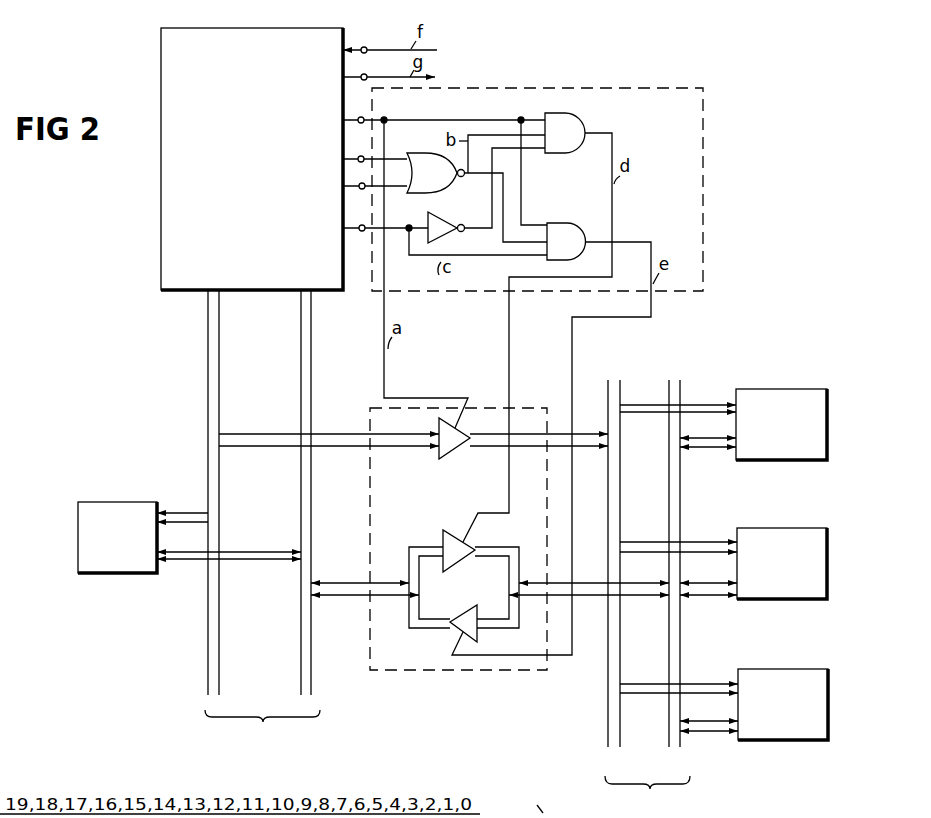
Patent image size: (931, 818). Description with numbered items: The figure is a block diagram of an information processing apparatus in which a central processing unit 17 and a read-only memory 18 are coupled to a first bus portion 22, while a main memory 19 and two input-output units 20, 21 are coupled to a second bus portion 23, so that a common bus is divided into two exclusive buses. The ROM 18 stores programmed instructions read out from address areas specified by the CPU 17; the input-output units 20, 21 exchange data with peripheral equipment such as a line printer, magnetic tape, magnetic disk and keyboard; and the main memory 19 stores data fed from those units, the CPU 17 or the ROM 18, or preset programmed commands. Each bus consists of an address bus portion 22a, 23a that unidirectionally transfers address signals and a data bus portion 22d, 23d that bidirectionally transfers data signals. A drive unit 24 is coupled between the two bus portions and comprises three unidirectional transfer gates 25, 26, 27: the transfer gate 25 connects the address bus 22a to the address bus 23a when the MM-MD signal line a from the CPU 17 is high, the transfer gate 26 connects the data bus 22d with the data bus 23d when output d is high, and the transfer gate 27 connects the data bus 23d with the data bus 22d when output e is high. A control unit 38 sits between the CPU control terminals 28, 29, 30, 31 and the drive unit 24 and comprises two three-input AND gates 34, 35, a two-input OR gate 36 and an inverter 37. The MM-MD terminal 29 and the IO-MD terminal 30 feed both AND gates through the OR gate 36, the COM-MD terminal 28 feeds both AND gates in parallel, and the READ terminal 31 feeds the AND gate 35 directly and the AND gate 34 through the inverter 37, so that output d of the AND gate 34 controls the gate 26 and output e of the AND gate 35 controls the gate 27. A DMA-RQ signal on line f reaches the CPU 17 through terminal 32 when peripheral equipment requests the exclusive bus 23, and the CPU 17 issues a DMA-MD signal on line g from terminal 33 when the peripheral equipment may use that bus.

The central processing unit 17 is at (193, 28).
The read-only memory 18 is at (106, 502).
The main memory 19 is at (803, 389).
The input-output unit 20 is at (796, 528).
The input-output unit 21 is at (798, 669).
The first bus portion 22 is at (243, 521).
The first address bus portion 22a is at (214, 683).
The first data bus portion 22d is at (304, 683).
The second bus portion 23 is at (632, 597).
The second address bus portion 23a is at (614, 737).
The second data bus portion 23d is at (675, 737).
The drive unit 24 is at (437, 672).
The transfer gate 25 is at (455, 459).
The transfer gate 26 is at (441, 527).
The transfer gate 27 is at (458, 637).
The COM-MD terminal 28 is at (359, 117).
The MM-MD terminal 29 is at (361, 156).
The IO-MD terminal 30 is at (361, 190).
The READ terminal 31 is at (361, 232).
The terminal 32 is at (366, 48).
The terminal 33 is at (366, 75).
The AND gate 34 is at (579, 118).
The AND gate 35 is at (569, 220).
The OR gate 36 is at (429, 153).
The inverter 37 is at (446, 219).
The control unit 38 is at (694, 86).